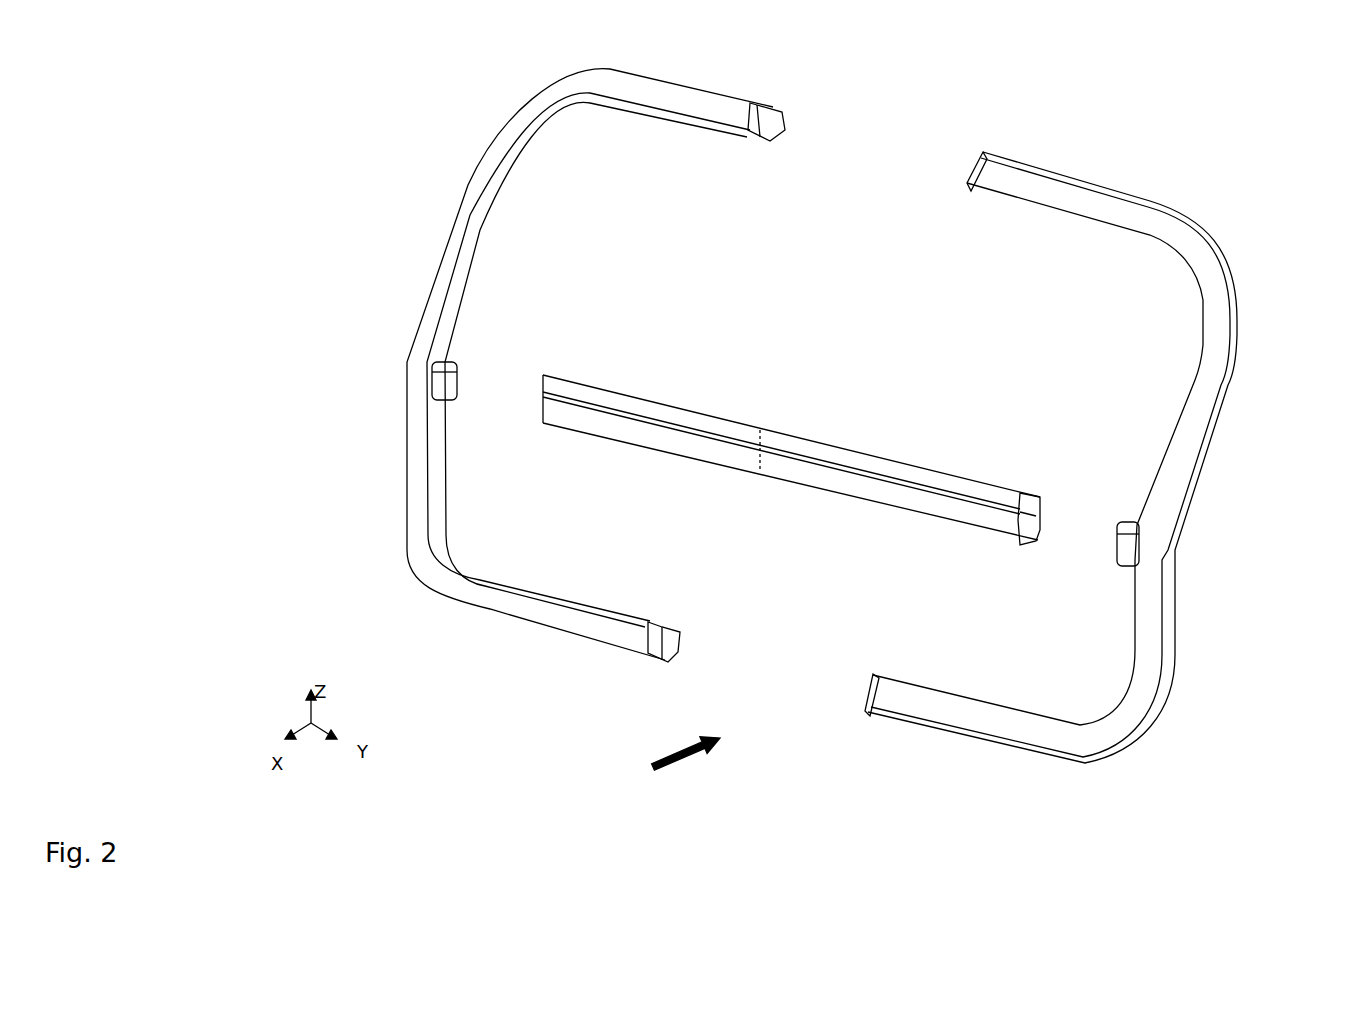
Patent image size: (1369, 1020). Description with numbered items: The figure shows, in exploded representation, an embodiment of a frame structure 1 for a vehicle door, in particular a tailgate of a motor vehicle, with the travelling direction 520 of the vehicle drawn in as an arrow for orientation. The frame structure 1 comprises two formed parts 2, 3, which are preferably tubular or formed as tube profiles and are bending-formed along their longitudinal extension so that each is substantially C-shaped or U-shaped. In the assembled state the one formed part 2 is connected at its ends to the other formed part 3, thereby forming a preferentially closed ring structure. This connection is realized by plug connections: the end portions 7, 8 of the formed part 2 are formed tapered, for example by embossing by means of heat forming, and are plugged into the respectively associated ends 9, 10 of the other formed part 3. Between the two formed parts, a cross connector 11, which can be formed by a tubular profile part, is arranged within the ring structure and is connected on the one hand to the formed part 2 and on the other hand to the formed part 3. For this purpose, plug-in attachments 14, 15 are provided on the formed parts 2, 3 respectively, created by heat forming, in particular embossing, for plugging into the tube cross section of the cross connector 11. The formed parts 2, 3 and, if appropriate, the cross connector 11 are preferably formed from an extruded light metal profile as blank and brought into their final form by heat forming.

The frame structure 1 is at (1110, 131).
The formed part 2 is at (453, 238).
The formed part 3 is at (1215, 343).
The end portion 7 is at (768, 117).
The end portion 8 is at (667, 630).
The end 9 is at (975, 167).
The end 10 is at (867, 690).
The cross connector 11 is at (688, 438).
The plug-in attachment 14 is at (440, 358).
The plug-in attachment 15 is at (1125, 550).
The travelling direction 520 is at (677, 765).